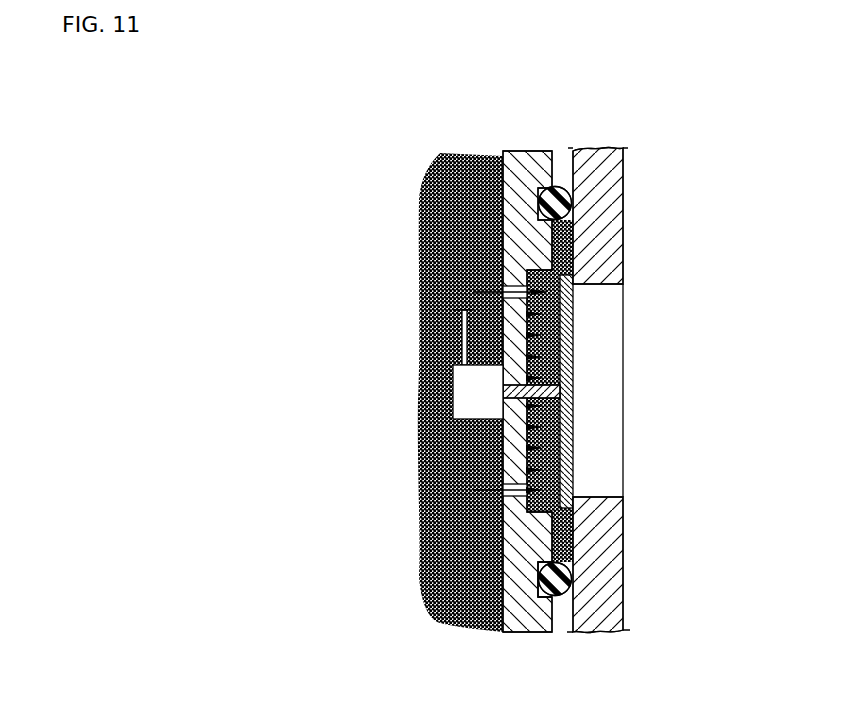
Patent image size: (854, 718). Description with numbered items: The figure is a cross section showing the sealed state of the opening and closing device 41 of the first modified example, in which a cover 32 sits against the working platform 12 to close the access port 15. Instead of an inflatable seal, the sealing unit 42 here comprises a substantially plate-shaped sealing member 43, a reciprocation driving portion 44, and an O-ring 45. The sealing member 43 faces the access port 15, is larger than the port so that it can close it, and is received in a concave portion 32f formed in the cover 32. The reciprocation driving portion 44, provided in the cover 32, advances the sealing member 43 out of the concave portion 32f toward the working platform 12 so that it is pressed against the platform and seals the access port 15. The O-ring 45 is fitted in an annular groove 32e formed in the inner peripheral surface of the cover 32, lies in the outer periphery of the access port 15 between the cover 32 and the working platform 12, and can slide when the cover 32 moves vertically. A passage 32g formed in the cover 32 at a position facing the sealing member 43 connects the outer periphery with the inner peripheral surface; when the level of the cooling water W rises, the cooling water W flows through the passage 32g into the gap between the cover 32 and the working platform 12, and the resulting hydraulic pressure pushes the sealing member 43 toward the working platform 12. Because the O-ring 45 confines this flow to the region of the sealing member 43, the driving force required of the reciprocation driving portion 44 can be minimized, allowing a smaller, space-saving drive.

The opening and closing device 41 is at (433, 188).
The cover 32 is at (500, 167).
The passage 32g is at (473, 292).
The concave portion 32f is at (528, 348).
The reciprocation driving portion 44 is at (463, 387).
The sealing member 43 is at (560, 434).
The sealing unit 42 is at (518, 461).
The cooling water W is at (453, 545).
The annular groove 32e is at (540, 577).
The working platform 12 is at (600, 185).
The access port 15 is at (605, 285).
The O-ring 45 is at (563, 578).